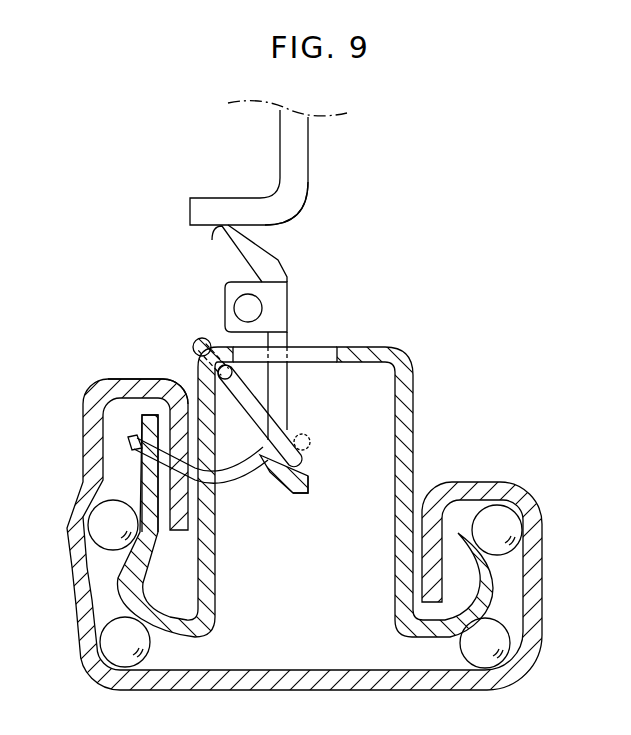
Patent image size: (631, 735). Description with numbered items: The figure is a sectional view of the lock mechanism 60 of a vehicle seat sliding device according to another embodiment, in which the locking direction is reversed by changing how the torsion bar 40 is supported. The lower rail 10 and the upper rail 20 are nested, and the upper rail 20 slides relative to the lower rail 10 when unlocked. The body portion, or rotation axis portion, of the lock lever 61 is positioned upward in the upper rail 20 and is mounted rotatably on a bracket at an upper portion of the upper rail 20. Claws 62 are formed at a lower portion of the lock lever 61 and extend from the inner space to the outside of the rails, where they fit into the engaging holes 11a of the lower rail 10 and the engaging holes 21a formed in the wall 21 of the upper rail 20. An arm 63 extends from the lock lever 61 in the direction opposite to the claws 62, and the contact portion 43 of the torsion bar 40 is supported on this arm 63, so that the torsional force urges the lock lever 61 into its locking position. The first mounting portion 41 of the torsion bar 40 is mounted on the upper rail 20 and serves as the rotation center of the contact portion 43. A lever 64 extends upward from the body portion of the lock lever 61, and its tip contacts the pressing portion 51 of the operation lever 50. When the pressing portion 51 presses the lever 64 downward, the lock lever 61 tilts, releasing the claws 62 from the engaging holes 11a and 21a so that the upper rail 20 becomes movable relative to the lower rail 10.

The lower rail 10 is at (520, 488).
The engaging holes of the lower rail 11a is at (193, 432).
The upper rail 20 is at (420, 433).
The upper rail wall 21 is at (194, 492).
The engaging holes of the upper rail 21a is at (208, 500).
The torsion bar 40 is at (252, 382).
The first mounting portion 41 is at (200, 338).
The contact portion 43 is at (300, 464).
The operation lever 50 is at (300, 163).
The pressing portion 51 is at (322, 203).
The lock mechanism 60 is at (289, 311).
The lock lever 61 is at (282, 389).
The claws 62 is at (133, 441).
The arm 63 is at (295, 498).
The lever 64 is at (280, 250).